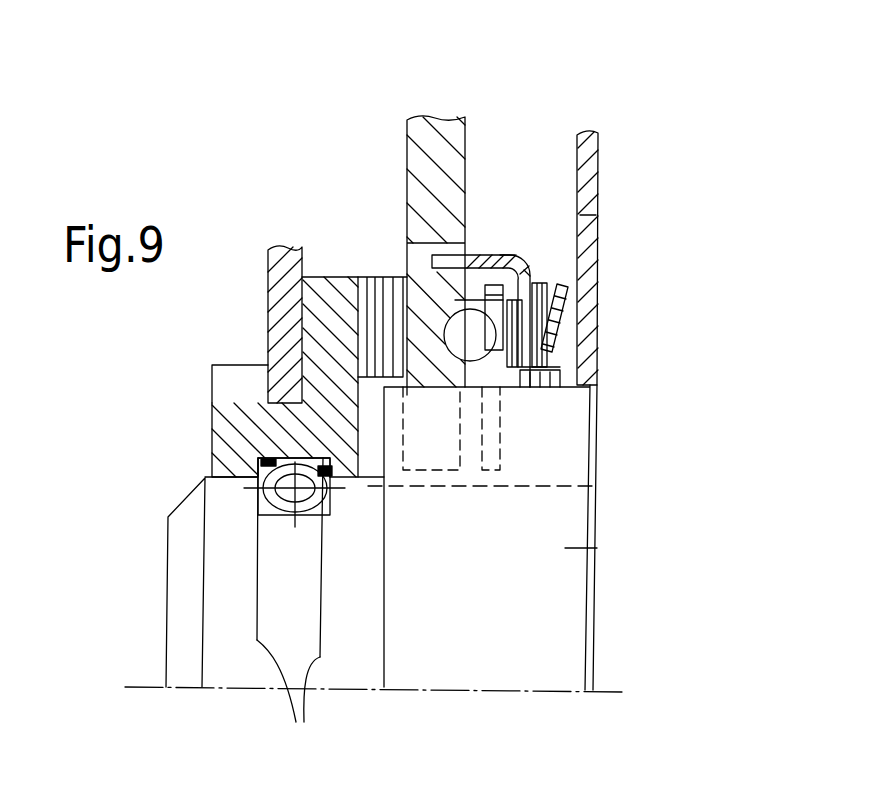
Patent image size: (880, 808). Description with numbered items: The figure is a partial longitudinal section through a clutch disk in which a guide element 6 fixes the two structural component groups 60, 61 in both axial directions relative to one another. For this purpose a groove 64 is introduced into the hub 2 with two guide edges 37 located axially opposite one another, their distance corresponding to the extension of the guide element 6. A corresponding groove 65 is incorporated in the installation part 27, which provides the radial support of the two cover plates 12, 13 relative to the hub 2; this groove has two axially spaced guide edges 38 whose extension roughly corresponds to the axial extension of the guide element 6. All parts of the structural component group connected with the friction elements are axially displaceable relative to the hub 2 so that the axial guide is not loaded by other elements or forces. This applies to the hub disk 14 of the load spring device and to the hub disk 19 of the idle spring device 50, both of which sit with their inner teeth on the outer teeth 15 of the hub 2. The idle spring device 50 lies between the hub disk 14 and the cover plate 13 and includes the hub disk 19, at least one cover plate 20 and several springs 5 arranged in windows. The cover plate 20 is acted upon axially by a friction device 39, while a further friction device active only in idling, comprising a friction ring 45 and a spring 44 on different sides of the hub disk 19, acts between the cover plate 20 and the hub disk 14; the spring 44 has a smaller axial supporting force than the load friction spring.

The hub 2 is at (553, 600).
The springs 5 is at (455, 315).
The guide element 6 is at (268, 500).
The cover plate 12 is at (267, 273).
The cover plate 13 is at (590, 165).
The hub disk 14 is at (423, 140).
The outer teeth 15 is at (560, 458).
The hub disk 19 is at (493, 290).
The cover plate 20 is at (530, 270).
The installation part 27 is at (232, 448).
The guide edges 37 is at (288, 704).
The guide edges 38 is at (325, 462).
The friction device 39 is at (548, 395).
The spring 44 is at (483, 300).
The friction ring 45 is at (500, 300).
The idle spring device 50 is at (505, 250).
The structural component group 60 is at (590, 217).
The structural component group 61 is at (565, 548).
The groove 64 is at (278, 503).
The groove 65 is at (278, 458).